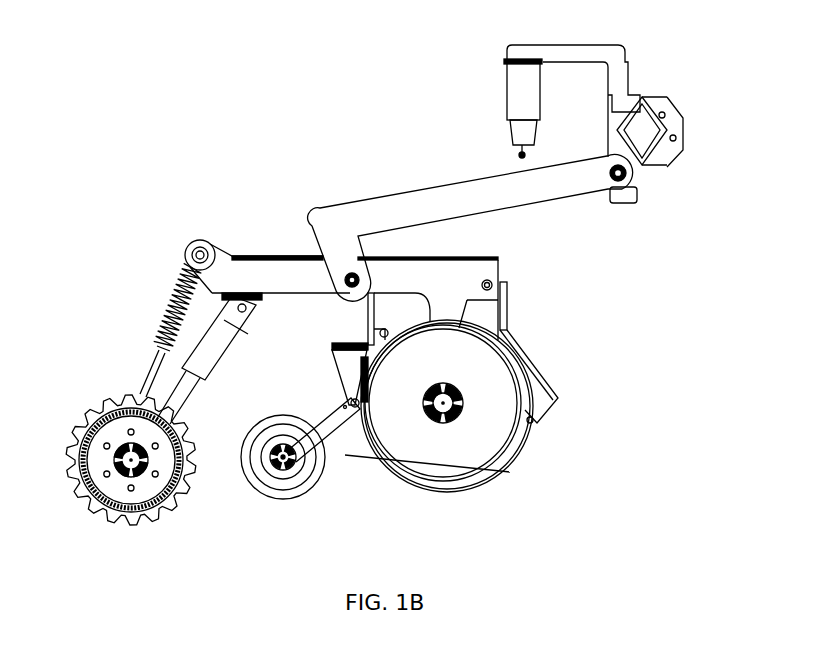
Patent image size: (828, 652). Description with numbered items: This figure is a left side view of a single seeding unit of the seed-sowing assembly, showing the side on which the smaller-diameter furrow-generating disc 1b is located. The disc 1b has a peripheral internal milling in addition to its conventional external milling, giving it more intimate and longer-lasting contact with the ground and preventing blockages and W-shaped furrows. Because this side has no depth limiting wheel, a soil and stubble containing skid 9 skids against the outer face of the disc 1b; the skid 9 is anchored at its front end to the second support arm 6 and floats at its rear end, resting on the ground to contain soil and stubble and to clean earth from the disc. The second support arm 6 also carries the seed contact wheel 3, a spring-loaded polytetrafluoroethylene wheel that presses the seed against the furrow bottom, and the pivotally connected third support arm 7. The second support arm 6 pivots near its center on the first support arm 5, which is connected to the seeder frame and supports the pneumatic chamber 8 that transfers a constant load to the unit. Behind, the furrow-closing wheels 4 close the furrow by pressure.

The furrow-generating disc 1b is at (422, 450).
The seed contact wheel 3 is at (270, 493).
The furrow-closing wheels 4 is at (112, 483).
The first support arm 5 is at (397, 207).
The second support arm 6 is at (256, 270).
The third support arm 7 is at (222, 338).
The pneumatic chamber 8 is at (520, 90).
The containing skid 9 is at (478, 474).